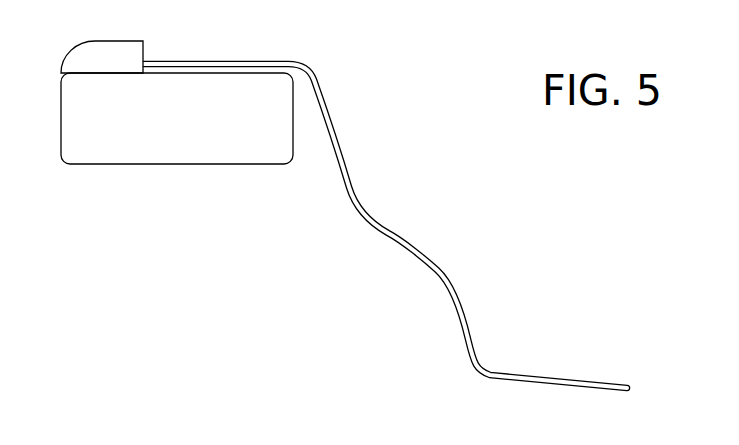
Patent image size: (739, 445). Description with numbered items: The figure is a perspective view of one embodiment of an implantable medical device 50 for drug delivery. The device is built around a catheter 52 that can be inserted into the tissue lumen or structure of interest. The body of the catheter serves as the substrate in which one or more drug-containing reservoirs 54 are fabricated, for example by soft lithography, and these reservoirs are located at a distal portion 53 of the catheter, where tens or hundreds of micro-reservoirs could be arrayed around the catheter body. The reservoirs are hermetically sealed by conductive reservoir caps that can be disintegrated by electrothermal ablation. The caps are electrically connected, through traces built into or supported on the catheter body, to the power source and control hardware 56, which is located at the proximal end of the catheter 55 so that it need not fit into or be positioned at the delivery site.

The medical device 50 is at (210, 237).
The catheter 52 is at (372, 219).
The distal portion 53 is at (488, 368).
The drug-containing reservoirs 54 is at (600, 389).
The proximal end of the catheter 55 is at (198, 58).
The power source and control hardware 56 is at (152, 164).